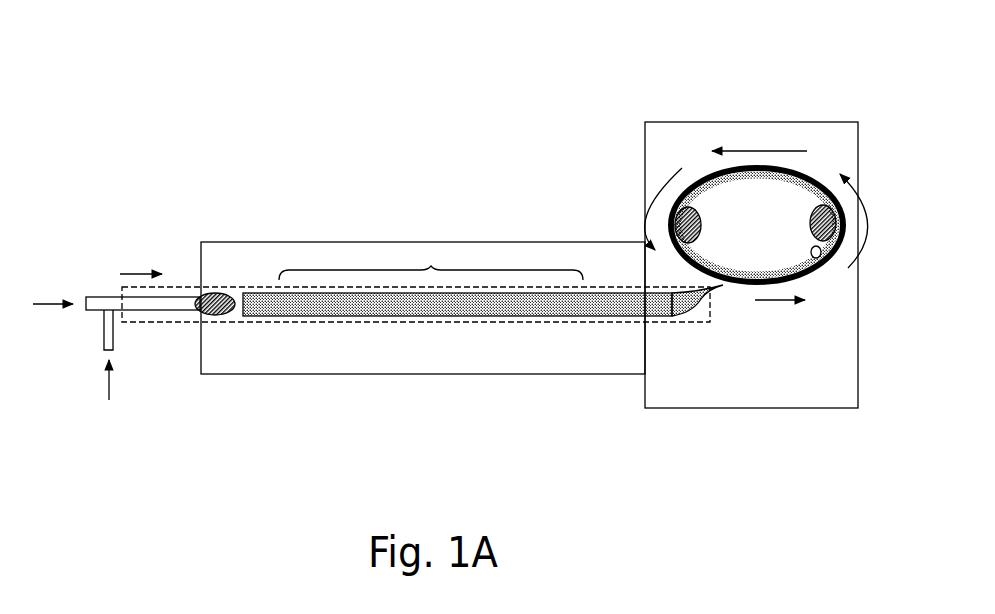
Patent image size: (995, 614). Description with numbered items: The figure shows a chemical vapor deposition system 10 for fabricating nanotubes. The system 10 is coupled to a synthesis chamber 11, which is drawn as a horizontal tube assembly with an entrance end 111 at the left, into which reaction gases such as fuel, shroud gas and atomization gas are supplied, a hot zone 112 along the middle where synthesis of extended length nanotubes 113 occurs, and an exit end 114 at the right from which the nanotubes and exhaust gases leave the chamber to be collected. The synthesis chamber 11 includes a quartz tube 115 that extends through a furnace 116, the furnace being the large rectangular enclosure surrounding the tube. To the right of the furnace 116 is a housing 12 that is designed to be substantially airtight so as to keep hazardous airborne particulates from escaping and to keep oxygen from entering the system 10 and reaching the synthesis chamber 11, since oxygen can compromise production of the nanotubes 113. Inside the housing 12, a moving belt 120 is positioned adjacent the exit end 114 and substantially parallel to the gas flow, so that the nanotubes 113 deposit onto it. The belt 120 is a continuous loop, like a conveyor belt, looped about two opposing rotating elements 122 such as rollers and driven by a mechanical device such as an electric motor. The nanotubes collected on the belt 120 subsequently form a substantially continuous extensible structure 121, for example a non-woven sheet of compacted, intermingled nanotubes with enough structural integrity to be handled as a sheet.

The system 10 is at (502, 78).
The synthesis chamber 11 is at (222, 287).
The housing 12 is at (758, 122).
The entrance end 111 is at (120, 327).
The hot zone 112 is at (431, 250).
The nanotubes 113 is at (722, 287).
The exit end 114 is at (712, 323).
The quartz tube 115 is at (551, 375).
The furnace 116 is at (543, 375).
The moving belt 120 is at (786, 192).
The substantially continuous extensible structure 121 is at (700, 177).
The rotating elements 122 is at (815, 228).